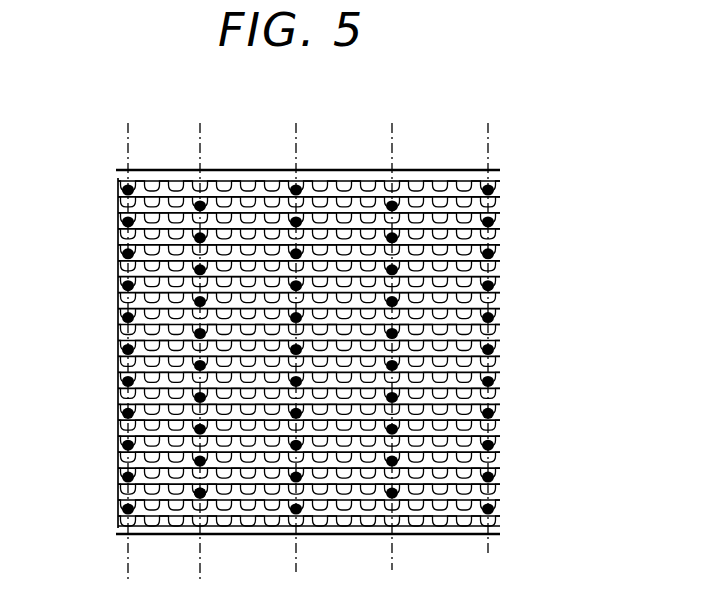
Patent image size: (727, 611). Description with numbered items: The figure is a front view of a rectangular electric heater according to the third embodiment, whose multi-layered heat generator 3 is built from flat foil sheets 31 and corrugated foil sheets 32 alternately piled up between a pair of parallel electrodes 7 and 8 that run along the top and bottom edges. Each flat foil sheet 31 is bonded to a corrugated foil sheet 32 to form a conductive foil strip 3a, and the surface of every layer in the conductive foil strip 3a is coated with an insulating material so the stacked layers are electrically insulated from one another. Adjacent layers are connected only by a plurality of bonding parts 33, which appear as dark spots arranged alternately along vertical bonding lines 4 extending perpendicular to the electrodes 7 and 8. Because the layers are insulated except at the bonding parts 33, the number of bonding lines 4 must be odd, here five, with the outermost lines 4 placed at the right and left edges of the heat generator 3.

The multi-layered heat generator 3 is at (314, 380).
The conductive foil strip 3a is at (115, 302).
The bonding line 4 is at (299, 553).
The electrode 7 is at (150, 172).
The electrode 8 is at (450, 535).
The flat foil sheet 31 is at (496, 368).
The corrugated foil sheet 32 is at (496, 333).
The bonding part 33 is at (199, 493).